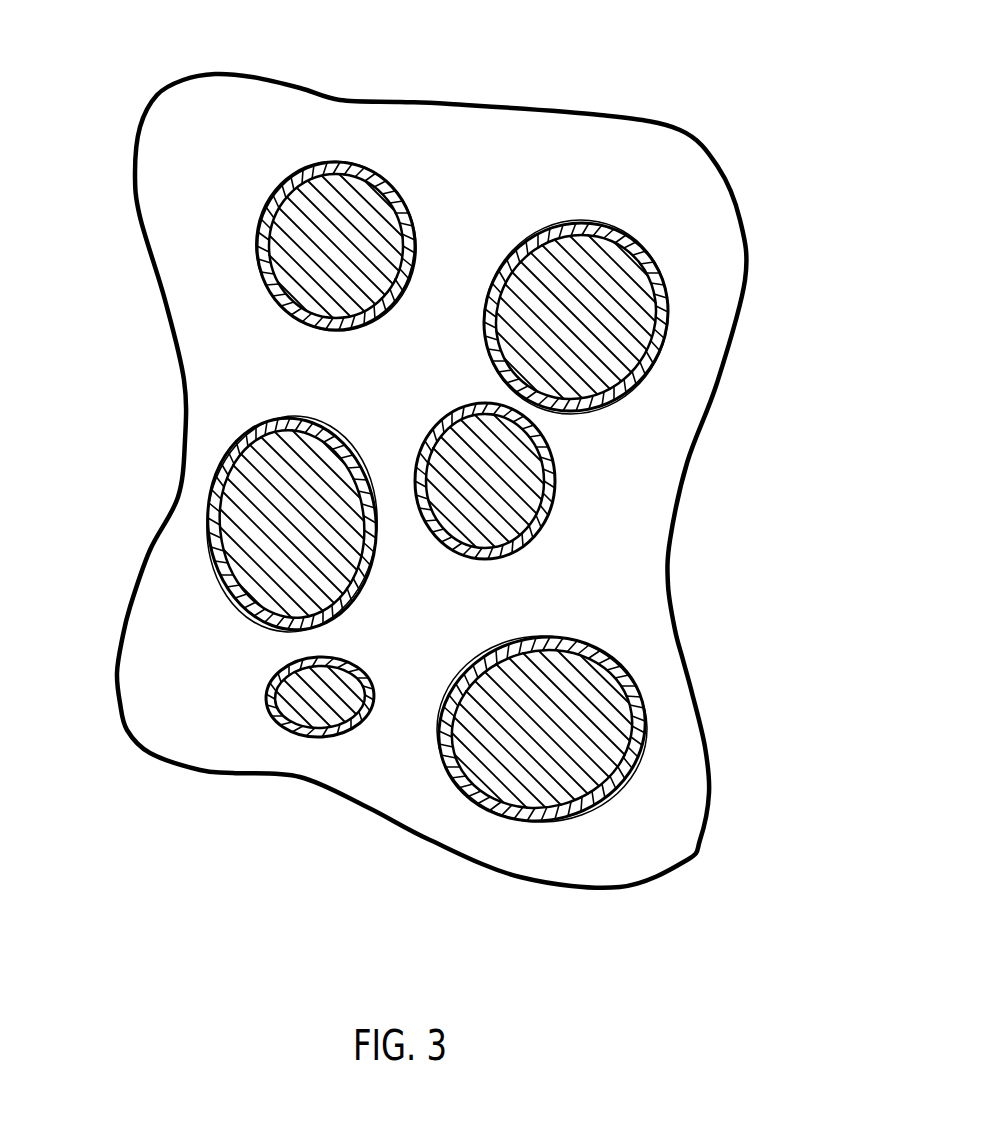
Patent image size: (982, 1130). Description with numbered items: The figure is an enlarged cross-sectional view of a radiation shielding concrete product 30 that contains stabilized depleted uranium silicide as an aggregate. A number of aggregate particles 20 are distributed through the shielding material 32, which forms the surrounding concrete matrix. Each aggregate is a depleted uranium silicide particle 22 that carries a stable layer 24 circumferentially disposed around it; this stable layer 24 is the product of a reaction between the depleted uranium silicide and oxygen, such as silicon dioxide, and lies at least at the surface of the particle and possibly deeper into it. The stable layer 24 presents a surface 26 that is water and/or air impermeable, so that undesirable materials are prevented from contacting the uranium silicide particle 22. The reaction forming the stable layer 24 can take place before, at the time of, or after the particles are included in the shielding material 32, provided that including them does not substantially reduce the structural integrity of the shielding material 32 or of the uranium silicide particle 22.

The optical fiber 20 is at (445, 489).
The uranium silicide particle 22 is at (352, 183).
The stable layer 24 is at (387, 181).
The surface 26 is at (416, 213).
The fiber ribbon assembly 30 is at (778, 652).
The shielding material 32 is at (710, 302).